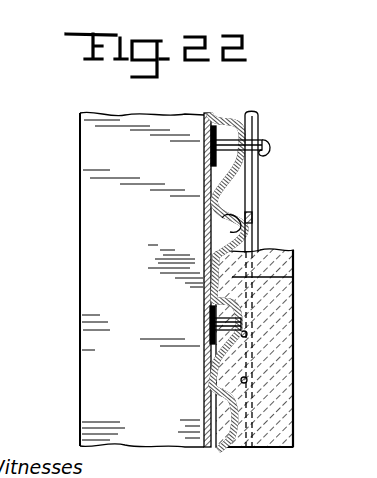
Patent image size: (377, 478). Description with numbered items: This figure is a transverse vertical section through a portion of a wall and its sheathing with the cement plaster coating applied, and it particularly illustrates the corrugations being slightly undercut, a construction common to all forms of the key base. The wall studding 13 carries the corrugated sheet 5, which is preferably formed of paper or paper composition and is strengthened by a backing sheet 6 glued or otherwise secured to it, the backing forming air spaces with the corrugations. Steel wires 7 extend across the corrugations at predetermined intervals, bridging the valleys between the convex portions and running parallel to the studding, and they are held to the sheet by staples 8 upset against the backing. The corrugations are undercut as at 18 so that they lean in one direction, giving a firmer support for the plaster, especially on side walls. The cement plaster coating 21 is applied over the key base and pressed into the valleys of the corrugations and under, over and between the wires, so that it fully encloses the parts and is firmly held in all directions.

The corrugated sheet 5 is at (246, 229).
The backing sheet 6 is at (208, 116).
The wires 7 is at (259, 184).
The staples 8 is at (265, 150).
The wall studding 13 is at (95, 345).
The undercut of the corrugations 18 is at (212, 204).
The cement plaster coating 21 is at (300, 333).